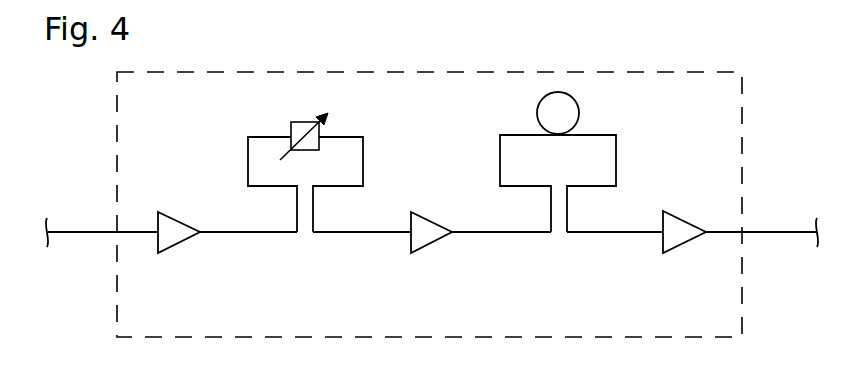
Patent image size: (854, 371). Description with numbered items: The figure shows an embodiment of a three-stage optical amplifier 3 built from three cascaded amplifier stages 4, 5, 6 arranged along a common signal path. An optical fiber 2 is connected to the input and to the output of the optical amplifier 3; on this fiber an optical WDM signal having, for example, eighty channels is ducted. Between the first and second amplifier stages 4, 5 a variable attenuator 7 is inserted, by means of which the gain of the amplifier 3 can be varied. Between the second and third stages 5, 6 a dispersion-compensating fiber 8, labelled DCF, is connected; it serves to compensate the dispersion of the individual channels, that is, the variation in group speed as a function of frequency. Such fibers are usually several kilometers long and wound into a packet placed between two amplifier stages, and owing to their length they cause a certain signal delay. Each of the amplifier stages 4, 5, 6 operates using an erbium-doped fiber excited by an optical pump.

The optical fiber 2 is at (73, 232).
The three-stage optical amplifier 3 is at (618, 72).
The amplifier stage 4 is at (172, 247).
The amplifier stage 5 is at (425, 246).
The amplifier stage 6 is at (677, 246).
The variable attenuator 7 is at (291, 128).
The dispersion-compensating fiber 8 is at (537, 113).